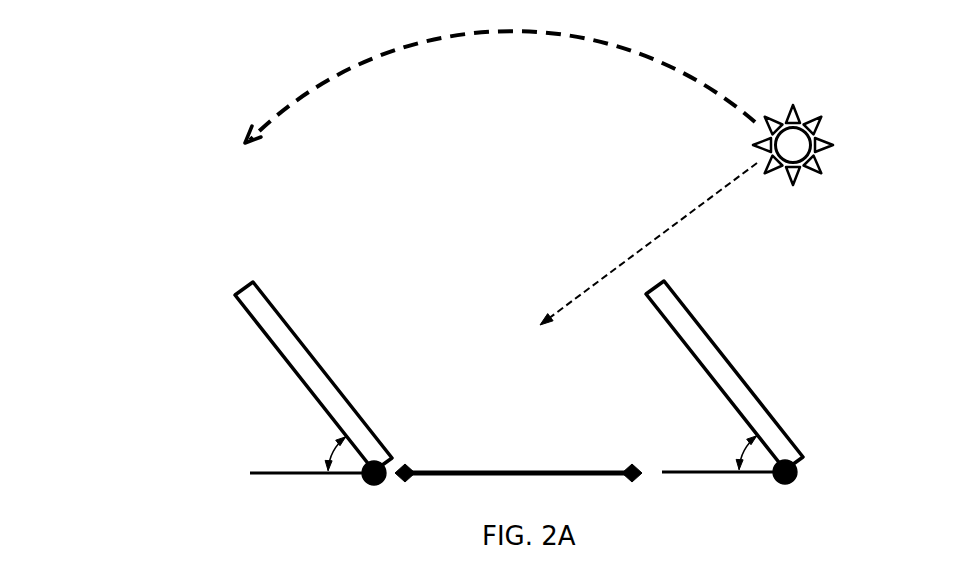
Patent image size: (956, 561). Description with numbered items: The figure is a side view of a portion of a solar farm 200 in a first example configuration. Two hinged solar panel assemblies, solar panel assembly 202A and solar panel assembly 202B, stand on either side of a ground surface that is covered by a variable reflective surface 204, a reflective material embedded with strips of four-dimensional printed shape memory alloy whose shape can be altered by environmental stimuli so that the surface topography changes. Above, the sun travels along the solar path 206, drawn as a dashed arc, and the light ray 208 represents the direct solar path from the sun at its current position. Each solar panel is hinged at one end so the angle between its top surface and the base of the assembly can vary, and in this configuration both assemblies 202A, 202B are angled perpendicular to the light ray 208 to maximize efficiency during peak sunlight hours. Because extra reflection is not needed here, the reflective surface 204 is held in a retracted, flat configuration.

The solar farm 200 is at (152, 135).
The solar panel assembly 202A is at (253, 318).
The solar panel assembly 202B is at (723, 355).
The variable reflective surface 204 is at (577, 468).
The solar path 206 is at (705, 88).
The light ray 208 is at (710, 197).